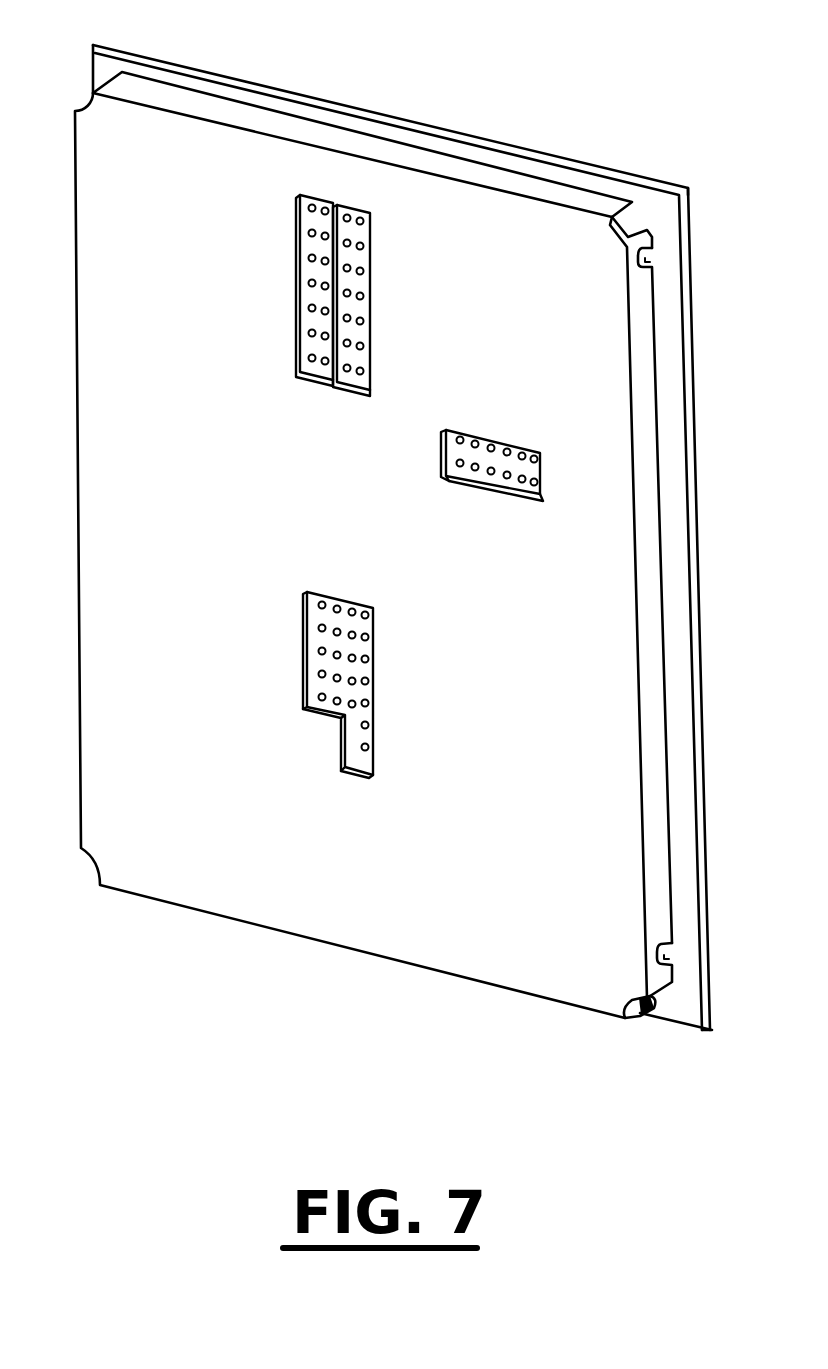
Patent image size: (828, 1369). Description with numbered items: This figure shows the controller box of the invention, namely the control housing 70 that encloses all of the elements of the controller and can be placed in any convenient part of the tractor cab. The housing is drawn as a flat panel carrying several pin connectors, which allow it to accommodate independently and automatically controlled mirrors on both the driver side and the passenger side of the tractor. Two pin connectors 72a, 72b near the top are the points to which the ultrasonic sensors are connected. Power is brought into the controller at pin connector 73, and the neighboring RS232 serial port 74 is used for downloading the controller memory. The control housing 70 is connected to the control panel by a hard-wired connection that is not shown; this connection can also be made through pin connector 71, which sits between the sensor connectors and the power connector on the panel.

The control housing 70 is at (337, 966).
The pin connector 71 is at (538, 485).
The ultrasonic sensor pin connector 72a is at (297, 190).
The ultrasonic sensor pin connector 72b is at (370, 217).
The pin connector 73 is at (366, 685).
The RS232 serial port 74 is at (316, 650).